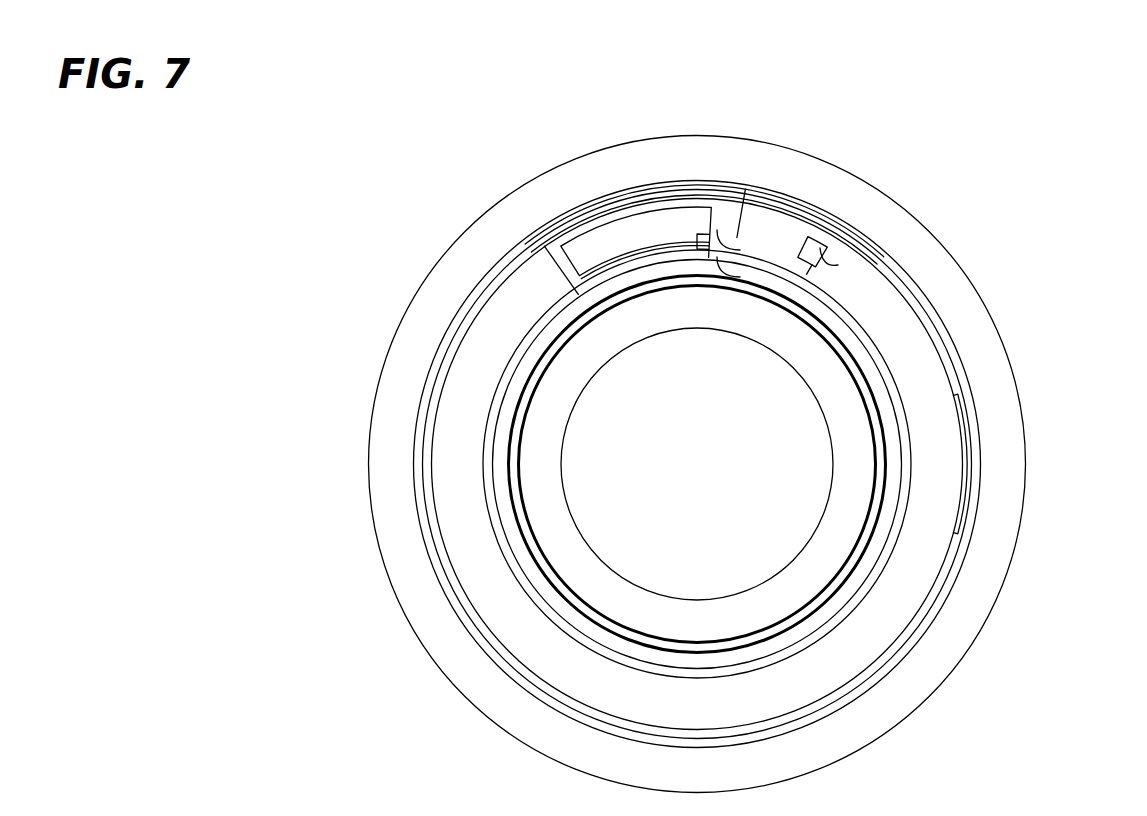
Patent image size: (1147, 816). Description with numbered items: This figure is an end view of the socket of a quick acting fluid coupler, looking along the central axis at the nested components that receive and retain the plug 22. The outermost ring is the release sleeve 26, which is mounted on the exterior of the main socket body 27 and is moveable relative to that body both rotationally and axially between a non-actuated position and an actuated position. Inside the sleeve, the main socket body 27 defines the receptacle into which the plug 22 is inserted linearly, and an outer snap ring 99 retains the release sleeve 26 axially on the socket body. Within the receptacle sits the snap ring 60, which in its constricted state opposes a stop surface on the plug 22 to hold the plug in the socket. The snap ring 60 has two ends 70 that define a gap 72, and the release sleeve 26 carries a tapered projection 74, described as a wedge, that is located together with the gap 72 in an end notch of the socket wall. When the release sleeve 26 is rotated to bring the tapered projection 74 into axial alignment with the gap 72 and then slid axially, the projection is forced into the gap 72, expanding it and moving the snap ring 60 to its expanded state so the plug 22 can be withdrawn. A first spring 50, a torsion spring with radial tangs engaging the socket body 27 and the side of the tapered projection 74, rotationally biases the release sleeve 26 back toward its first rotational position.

The plug 22 is at (905, 112).
The release sleeve 26 is at (950, 257).
The main socket body 27 is at (962, 481).
The first spring 50 is at (653, 240).
The snap ring 60 is at (900, 435).
The ends 70 is at (748, 238).
The gap 72 is at (775, 277).
The tapered projection 74 is at (812, 248).
The outer snap ring 99 is at (925, 323).